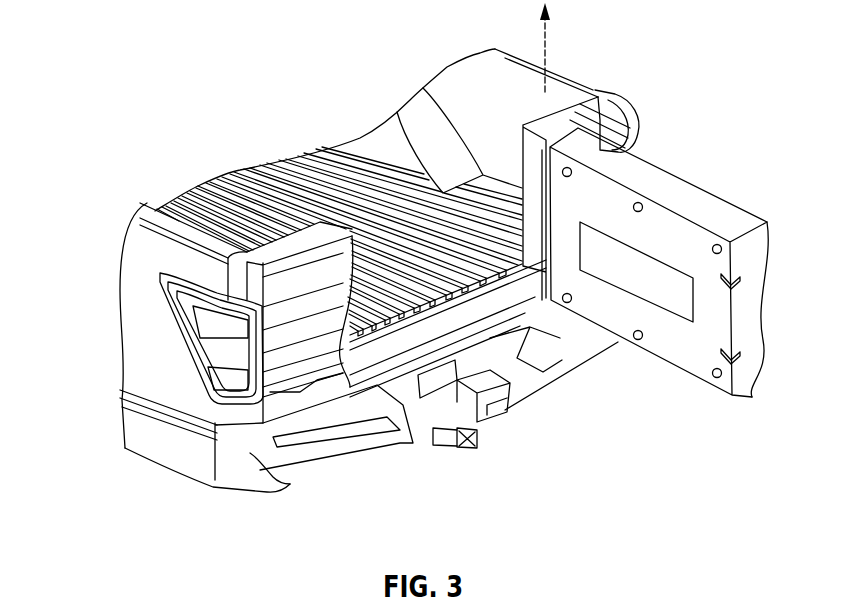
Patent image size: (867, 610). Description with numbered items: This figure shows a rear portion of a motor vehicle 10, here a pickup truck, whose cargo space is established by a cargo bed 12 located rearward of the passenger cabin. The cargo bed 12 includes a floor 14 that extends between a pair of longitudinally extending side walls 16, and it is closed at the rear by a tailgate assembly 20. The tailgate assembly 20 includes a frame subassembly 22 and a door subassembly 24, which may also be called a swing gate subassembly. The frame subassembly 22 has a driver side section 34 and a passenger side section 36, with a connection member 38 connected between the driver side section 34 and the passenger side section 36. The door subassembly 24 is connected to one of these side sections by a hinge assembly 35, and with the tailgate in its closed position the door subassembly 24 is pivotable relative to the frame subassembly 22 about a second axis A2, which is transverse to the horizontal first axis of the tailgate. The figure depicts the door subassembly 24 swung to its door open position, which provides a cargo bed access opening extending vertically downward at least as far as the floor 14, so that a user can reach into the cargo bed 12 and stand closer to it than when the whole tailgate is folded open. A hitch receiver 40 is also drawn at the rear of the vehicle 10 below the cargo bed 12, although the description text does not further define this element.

The motor vehicle 10 is at (92, 111).
The cargo bed 12 is at (243, 194).
The floor 14 is at (375, 235).
The side walls 16 is at (487, 78).
The tailgate assembly 20 is at (603, 100).
The frame subassembly 22 is at (624, 140).
The door subassembly 24 is at (723, 219).
The driver side section 34 is at (280, 342).
The hinge assembly 35 is at (529, 178).
The passenger side section 36 is at (565, 125).
The connection member 38 is at (507, 302).
The trailer hitch receiver 40 is at (466, 448).
The second axis A2 is at (548, 33).